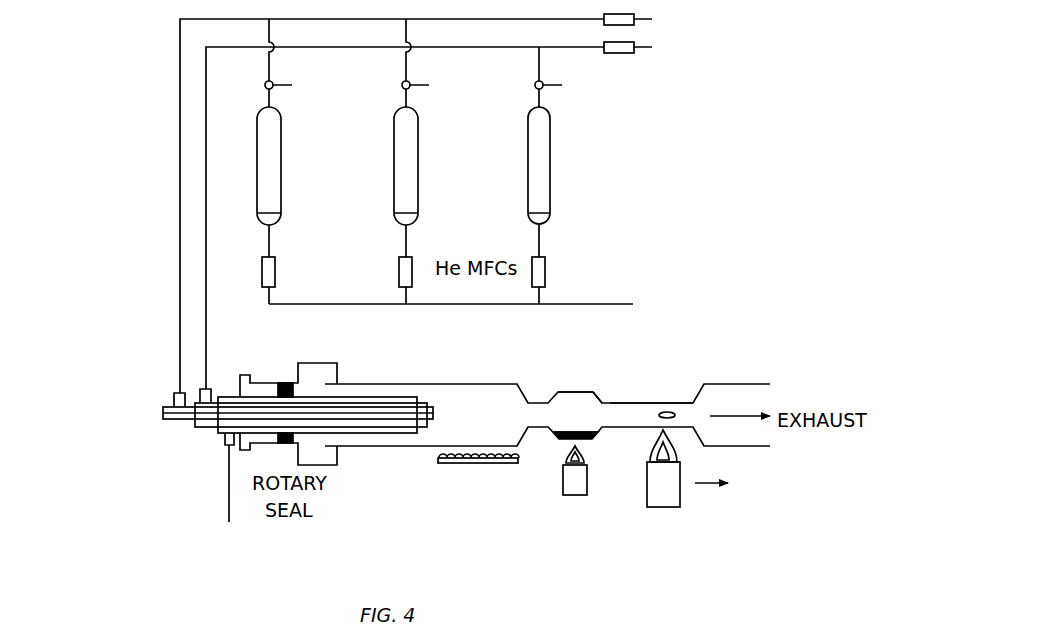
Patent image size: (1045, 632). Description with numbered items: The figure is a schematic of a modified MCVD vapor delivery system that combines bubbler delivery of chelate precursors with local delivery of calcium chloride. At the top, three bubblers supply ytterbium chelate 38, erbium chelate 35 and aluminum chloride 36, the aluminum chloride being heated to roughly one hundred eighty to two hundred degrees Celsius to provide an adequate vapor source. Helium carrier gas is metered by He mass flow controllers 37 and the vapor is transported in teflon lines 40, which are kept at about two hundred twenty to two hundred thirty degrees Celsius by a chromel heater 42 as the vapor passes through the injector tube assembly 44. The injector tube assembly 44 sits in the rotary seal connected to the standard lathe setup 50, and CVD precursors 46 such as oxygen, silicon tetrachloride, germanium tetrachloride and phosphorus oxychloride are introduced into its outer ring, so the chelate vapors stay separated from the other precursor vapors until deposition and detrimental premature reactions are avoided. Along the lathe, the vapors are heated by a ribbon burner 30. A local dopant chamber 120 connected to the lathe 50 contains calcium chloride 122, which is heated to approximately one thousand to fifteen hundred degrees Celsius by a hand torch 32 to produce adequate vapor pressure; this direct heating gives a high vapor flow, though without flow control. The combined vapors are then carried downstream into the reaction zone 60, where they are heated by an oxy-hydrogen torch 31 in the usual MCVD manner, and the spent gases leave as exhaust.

The ribbon burner 30 is at (478, 500).
The oxy-hydrogen torch 31 is at (694, 509).
The hand torch 32 is at (570, 514).
The Er(tmhd)3 35 is at (418, 200).
The AlCl3 36 is at (550, 200).
The He mass flow controller 37 is at (667, 42).
The Yb(tmhd)3 38 is at (281, 200).
The teflon lines 40 is at (178, 314).
The chromel heater 42 is at (160, 415).
The injector tube assembly 44 is at (188, 430).
The CVD precursors 46 is at (240, 518).
The standard lathe setup 50 is at (481, 375).
The reaction zone 60 is at (668, 394).
The local dopant chamber 120 is at (602, 392).
The CaCl2 122 is at (574, 390).